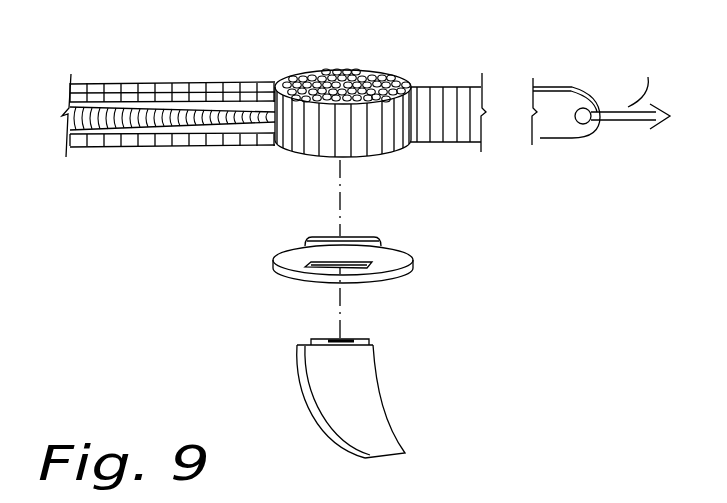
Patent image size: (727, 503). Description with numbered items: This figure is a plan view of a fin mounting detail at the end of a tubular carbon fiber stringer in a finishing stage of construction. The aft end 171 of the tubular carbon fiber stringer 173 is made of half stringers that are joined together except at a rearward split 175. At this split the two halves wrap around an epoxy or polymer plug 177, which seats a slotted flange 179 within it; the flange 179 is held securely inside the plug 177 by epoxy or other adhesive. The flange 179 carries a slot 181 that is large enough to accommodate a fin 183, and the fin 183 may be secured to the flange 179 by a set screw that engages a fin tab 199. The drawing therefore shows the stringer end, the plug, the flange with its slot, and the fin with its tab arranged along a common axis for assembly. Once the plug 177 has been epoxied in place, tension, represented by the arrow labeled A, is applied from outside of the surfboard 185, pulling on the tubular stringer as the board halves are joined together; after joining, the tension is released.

The aft end 171 is at (455, 66).
The tubular carbon fiber stringer 173 is at (224, 76).
The rearward split 175 is at (398, 138).
The epoxy or polymer plug 177 is at (346, 70).
The slotted flange 179 is at (395, 270).
The slot 181 is at (320, 269).
The fin 183 is at (375, 415).
The surfboard 185 is at (553, 95).
The fin tab 199 is at (358, 238).